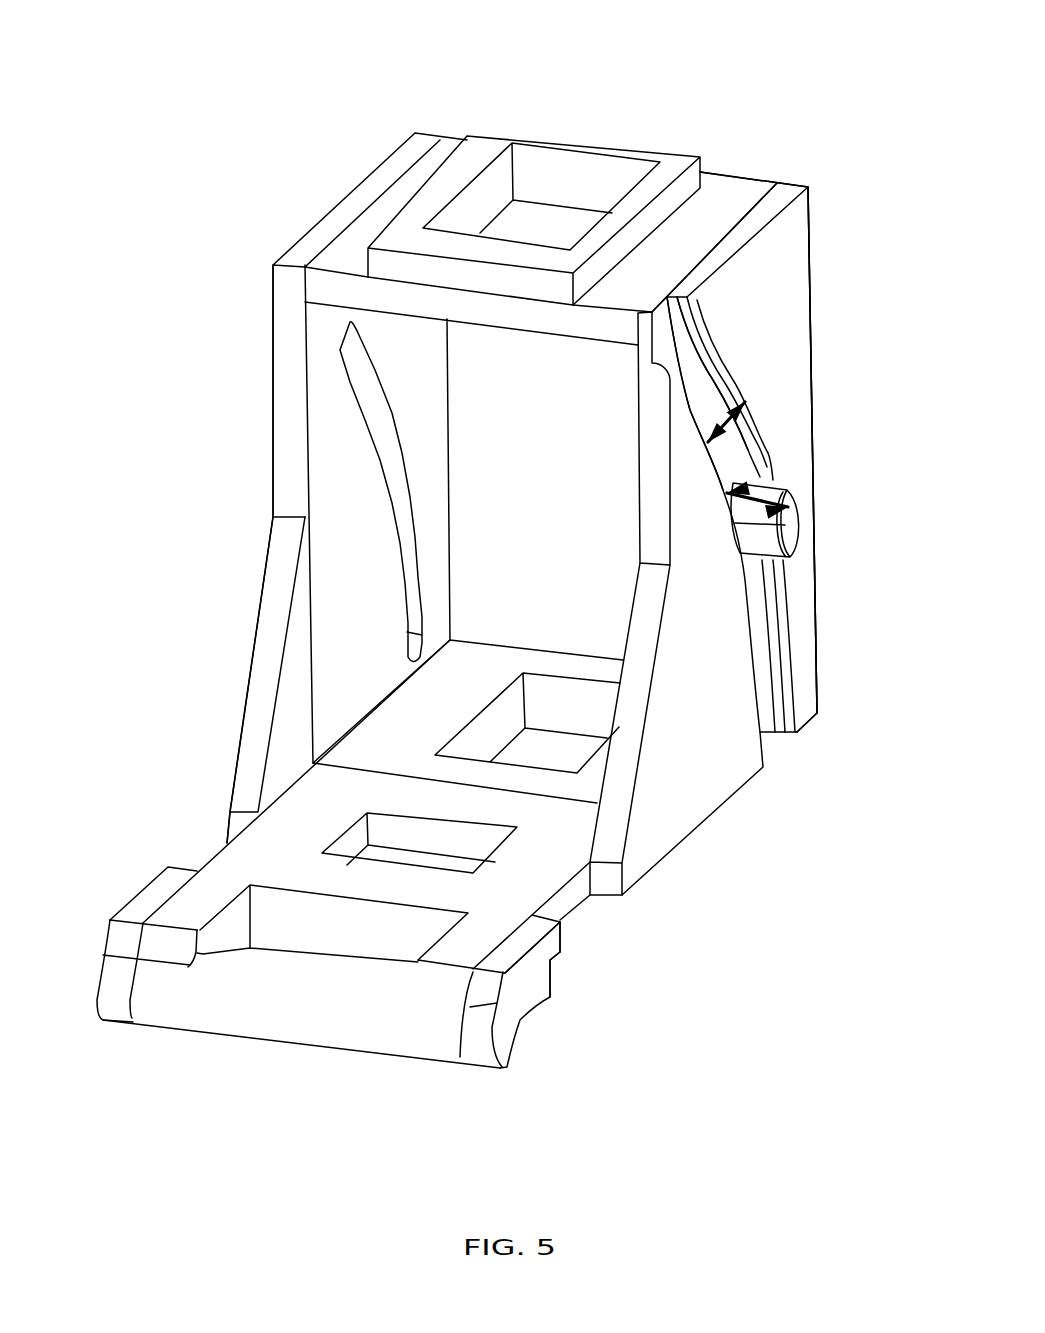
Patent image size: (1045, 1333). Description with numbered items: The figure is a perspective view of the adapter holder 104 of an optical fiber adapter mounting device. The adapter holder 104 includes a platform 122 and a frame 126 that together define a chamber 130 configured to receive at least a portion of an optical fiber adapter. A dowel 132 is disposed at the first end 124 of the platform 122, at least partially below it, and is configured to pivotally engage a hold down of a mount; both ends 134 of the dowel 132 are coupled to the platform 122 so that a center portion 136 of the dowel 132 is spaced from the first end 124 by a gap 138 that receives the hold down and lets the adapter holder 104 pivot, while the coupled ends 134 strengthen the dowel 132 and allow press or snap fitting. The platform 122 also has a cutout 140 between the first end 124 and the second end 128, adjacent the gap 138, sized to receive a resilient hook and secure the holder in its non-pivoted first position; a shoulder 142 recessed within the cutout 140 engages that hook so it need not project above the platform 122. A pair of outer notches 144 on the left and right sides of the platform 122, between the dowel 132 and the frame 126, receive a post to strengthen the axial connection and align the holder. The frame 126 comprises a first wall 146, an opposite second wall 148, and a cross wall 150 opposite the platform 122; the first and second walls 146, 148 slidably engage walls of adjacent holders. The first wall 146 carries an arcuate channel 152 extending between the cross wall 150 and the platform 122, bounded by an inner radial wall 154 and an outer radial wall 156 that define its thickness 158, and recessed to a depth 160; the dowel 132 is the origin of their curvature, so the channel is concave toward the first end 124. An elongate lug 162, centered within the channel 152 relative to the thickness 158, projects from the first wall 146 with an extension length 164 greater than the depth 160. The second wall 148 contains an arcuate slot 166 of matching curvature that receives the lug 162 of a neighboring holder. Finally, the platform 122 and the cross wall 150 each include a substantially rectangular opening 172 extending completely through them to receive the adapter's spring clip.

The adapter holder 104 is at (806, 96).
The platform 122 is at (300, 826).
The first end 124 is at (520, 975).
The frame 126 is at (813, 209).
The second end 128 is at (820, 713).
The chamber 130 is at (489, 374).
The dowel 132 is at (413, 1062).
The ends 134 is at (123, 1010).
The center portion 136 is at (283, 1042).
The gap 138 is at (290, 954).
The cutout 140 is at (503, 843).
The shoulder 142 is at (405, 852).
The outer notches 144 is at (208, 851).
The first wall 146 is at (815, 410).
The second wall 148 is at (274, 399).
The cross wall 150 is at (467, 140).
The arcuate channel 152 is at (774, 636).
The inner radial wall 154 is at (688, 416).
The outer radial wall 156 is at (703, 323).
The thickness 158 is at (728, 437).
The depth 160 is at (762, 733).
The lug 162 is at (793, 528).
The extension length 164 is at (788, 507).
The arcuate slot 166 is at (395, 510).
The opening 172 is at (565, 213).